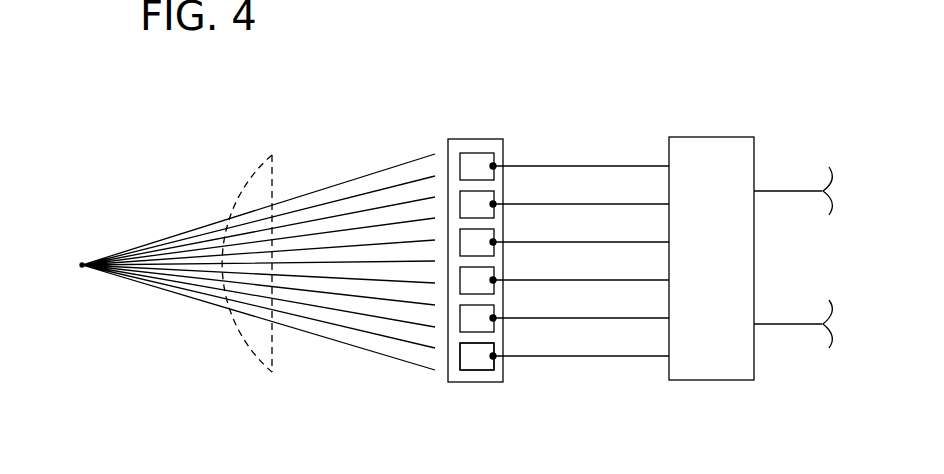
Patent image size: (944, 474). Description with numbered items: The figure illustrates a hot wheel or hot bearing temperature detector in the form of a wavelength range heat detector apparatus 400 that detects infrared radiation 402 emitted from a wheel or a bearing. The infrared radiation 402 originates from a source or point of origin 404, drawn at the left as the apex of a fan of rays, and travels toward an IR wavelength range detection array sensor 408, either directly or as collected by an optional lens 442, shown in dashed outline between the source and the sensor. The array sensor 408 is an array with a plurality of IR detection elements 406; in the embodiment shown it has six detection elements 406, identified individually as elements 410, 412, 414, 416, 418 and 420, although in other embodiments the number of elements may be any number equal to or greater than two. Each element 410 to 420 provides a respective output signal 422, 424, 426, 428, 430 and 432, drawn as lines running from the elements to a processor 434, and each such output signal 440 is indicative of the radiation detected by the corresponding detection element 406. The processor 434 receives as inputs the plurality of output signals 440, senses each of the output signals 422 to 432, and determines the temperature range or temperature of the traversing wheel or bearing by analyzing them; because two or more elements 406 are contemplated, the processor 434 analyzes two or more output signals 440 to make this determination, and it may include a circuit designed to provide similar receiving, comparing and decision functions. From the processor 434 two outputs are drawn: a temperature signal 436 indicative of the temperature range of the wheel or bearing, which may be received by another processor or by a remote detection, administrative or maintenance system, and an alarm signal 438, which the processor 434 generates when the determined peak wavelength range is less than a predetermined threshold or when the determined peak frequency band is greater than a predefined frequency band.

The wavelength range heat detector apparatus 400 is at (460, 105).
The infrared radiation 402 is at (352, 345).
The source or point of origin 404 is at (82, 268).
The IR detection element 406 is at (490, 377).
The IR wavelength range detection array sensor 408 is at (477, 385).
The detection element 410 is at (494, 153).
The detection element 412 is at (494, 193).
The detection element 414 is at (494, 231).
The detection element 416 is at (494, 270).
The detection element 418 is at (494, 308).
The detection element 420 is at (494, 346).
The output signal 422 is at (605, 165).
The output signal 424 is at (648, 203).
The output signal 426 is at (655, 241).
The output signal 428 is at (653, 279).
The output signal 430 is at (653, 317).
The output signal 432 is at (590, 357).
The processor 434 is at (698, 381).
The temperature signal 436 is at (812, 191).
The alarm signal 438 is at (814, 324).
The output signals 440 is at (579, 361).
The lens 442 is at (253, 362).